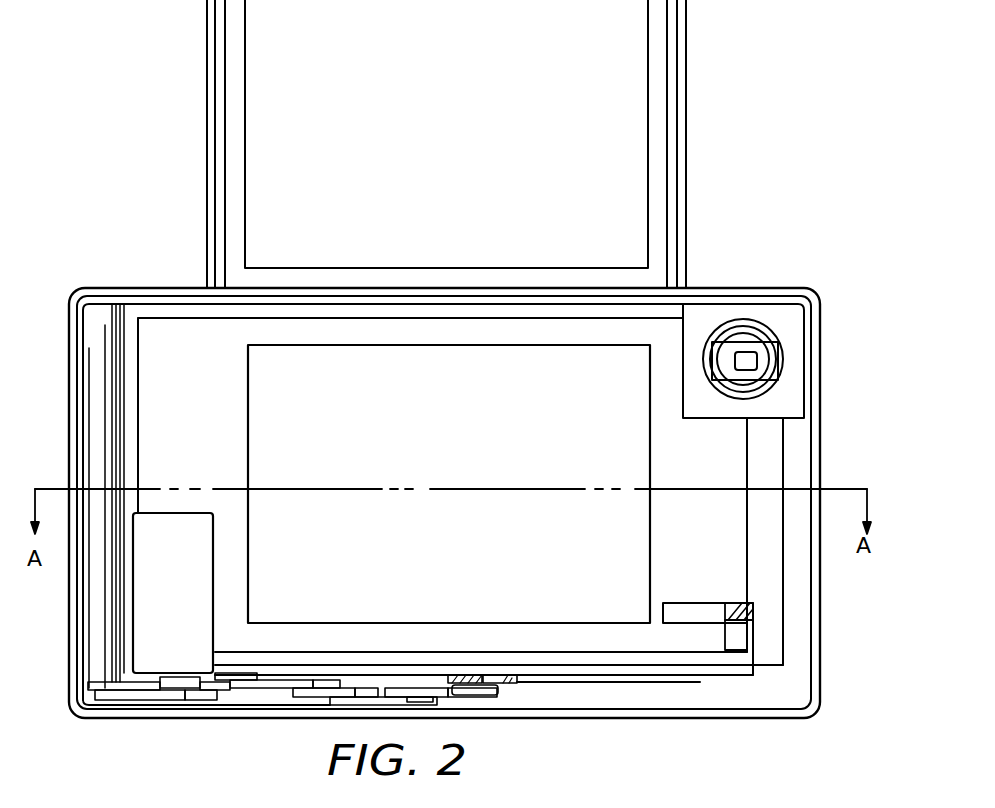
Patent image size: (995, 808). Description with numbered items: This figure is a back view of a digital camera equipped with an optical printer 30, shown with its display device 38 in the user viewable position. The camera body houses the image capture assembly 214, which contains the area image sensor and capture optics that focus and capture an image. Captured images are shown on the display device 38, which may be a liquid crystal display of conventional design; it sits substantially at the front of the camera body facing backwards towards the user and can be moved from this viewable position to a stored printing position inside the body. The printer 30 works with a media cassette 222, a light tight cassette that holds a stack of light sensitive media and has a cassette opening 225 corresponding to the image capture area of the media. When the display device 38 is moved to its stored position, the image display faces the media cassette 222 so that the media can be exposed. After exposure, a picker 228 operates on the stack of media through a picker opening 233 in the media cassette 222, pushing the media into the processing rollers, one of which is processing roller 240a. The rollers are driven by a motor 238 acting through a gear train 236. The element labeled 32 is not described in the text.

The printer 30 is at (673, 678).
The keyboard connector 32 is at (500, 680).
The display device 38 is at (686, 130).
The image capture assembly 214 is at (797, 305).
The media cassette 222 is at (772, 585).
The cassette opening 225 is at (351, 390).
The picker 228 is at (753, 612).
The picker opening 233 is at (693, 610).
The gear train 236 is at (310, 707).
The motor 238 is at (147, 595).
The processing roller 240a is at (100, 643).